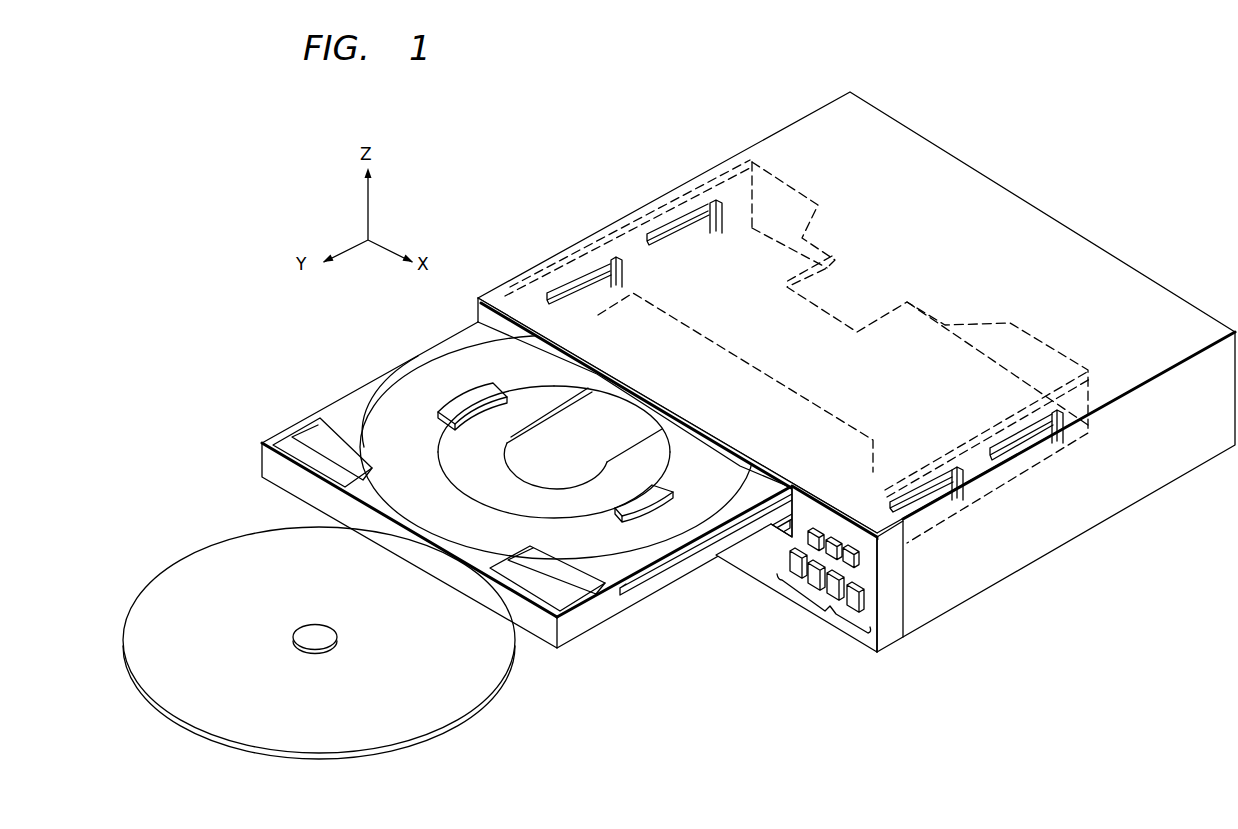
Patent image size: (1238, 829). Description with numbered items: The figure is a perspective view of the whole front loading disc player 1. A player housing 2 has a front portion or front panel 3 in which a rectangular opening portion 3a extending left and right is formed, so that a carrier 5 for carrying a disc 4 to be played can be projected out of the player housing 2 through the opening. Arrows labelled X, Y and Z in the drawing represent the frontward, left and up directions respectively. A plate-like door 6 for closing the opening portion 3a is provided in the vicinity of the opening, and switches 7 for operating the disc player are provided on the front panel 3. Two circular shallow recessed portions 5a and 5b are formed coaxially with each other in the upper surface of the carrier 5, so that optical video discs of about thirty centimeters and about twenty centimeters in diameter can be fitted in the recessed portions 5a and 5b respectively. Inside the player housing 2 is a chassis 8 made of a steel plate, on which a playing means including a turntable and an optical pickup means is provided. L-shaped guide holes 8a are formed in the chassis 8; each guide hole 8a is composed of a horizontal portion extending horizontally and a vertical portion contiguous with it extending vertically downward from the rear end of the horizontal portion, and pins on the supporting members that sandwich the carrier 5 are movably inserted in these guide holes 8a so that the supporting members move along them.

The front loading disc player 1 is at (856, 370).
The player housing 2 is at (760, 141).
The front panel 3 is at (811, 553).
The opening portion 3a is at (783, 528).
The disc 4 is at (479, 692).
The carrier 5 is at (335, 404).
The recessed portion 5a is at (633, 537).
The recessed portion 5b is at (585, 502).
The door 6 is at (752, 551).
The switches 7 is at (829, 611).
The chassis 8 is at (1013, 390).
The L-shaped guide holes 8a is at (610, 283).